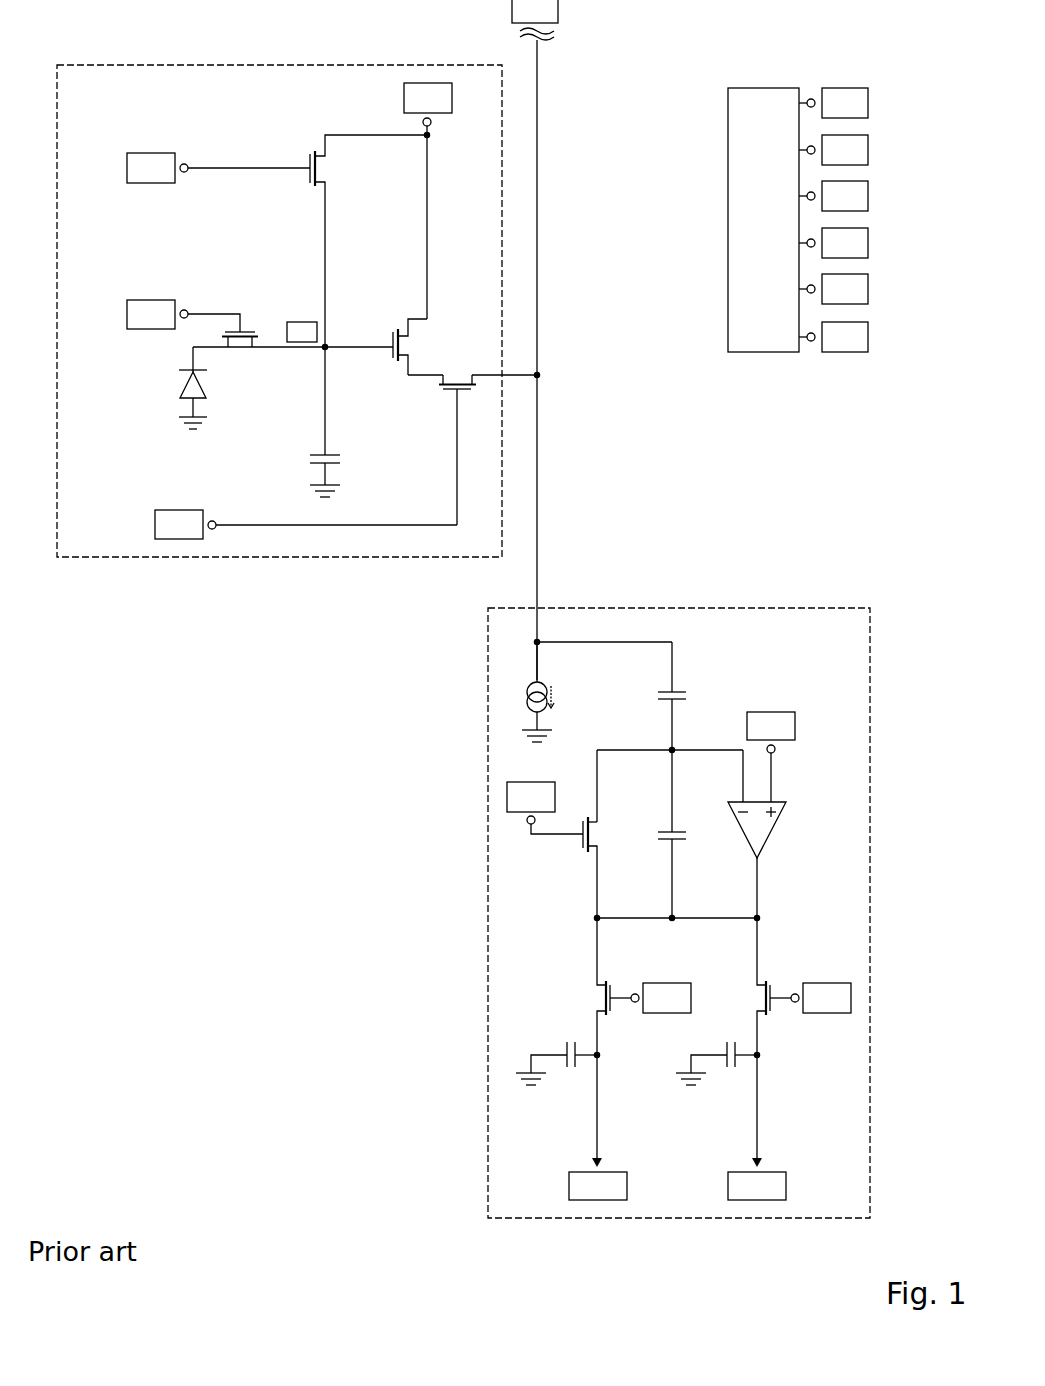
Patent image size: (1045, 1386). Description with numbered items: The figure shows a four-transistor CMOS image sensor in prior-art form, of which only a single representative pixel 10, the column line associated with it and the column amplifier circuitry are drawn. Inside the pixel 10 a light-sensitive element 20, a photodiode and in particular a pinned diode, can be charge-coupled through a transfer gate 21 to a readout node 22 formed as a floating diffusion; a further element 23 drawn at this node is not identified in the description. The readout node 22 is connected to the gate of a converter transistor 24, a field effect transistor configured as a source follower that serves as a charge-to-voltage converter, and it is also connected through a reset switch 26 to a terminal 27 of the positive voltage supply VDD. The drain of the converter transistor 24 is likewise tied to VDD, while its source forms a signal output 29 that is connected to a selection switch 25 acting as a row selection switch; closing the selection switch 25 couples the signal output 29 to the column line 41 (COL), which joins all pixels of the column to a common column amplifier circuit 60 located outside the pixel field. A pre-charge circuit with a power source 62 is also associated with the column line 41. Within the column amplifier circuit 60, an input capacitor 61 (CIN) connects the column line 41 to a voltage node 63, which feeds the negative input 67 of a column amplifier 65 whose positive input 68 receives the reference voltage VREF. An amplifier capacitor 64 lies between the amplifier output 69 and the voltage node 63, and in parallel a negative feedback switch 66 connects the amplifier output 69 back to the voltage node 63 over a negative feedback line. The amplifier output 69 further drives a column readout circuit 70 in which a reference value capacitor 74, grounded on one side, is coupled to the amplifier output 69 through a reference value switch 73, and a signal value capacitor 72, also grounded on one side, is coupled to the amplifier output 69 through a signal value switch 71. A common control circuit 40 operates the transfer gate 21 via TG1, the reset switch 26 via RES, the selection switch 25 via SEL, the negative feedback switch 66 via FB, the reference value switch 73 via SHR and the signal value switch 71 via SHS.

The pixel 10 is at (157, 56).
The light-sensitive element 20 is at (174, 383).
The transfer gate 21 is at (250, 331).
The readout node 22 is at (314, 353).
The floating diffusion capacitance 23 is at (300, 457).
The converter transistor 24 is at (390, 338).
The selection switch 25 is at (458, 374).
The reset switch 26 is at (306, 161).
The terminal of a voltage supply 27 is at (435, 143).
The signal output 29 is at (407, 385).
The control circuit 40 is at (791, 84).
The column line 41 is at (544, 138).
The column amplifier circuit 60 is at (800, 604).
The input capacitor 61 is at (692, 696).
The power source 62 is at (560, 702).
The voltage node 63 is at (665, 757).
The amplifier capacitor 64 is at (684, 847).
The column amplifier 65 is at (770, 834).
The negative feedback switch 66 is at (580, 858).
The negative input 67 is at (737, 796).
The positive input 68 is at (780, 796).
The amplifier output 69 is at (765, 868).
The column readout circuit 70 is at (572, 969).
The signal value switch 71 is at (780, 976).
The signal value capacitor 72 is at (726, 1078).
The reference value switch 73 is at (620, 976).
The reference value capacitor 74 is at (566, 1078).